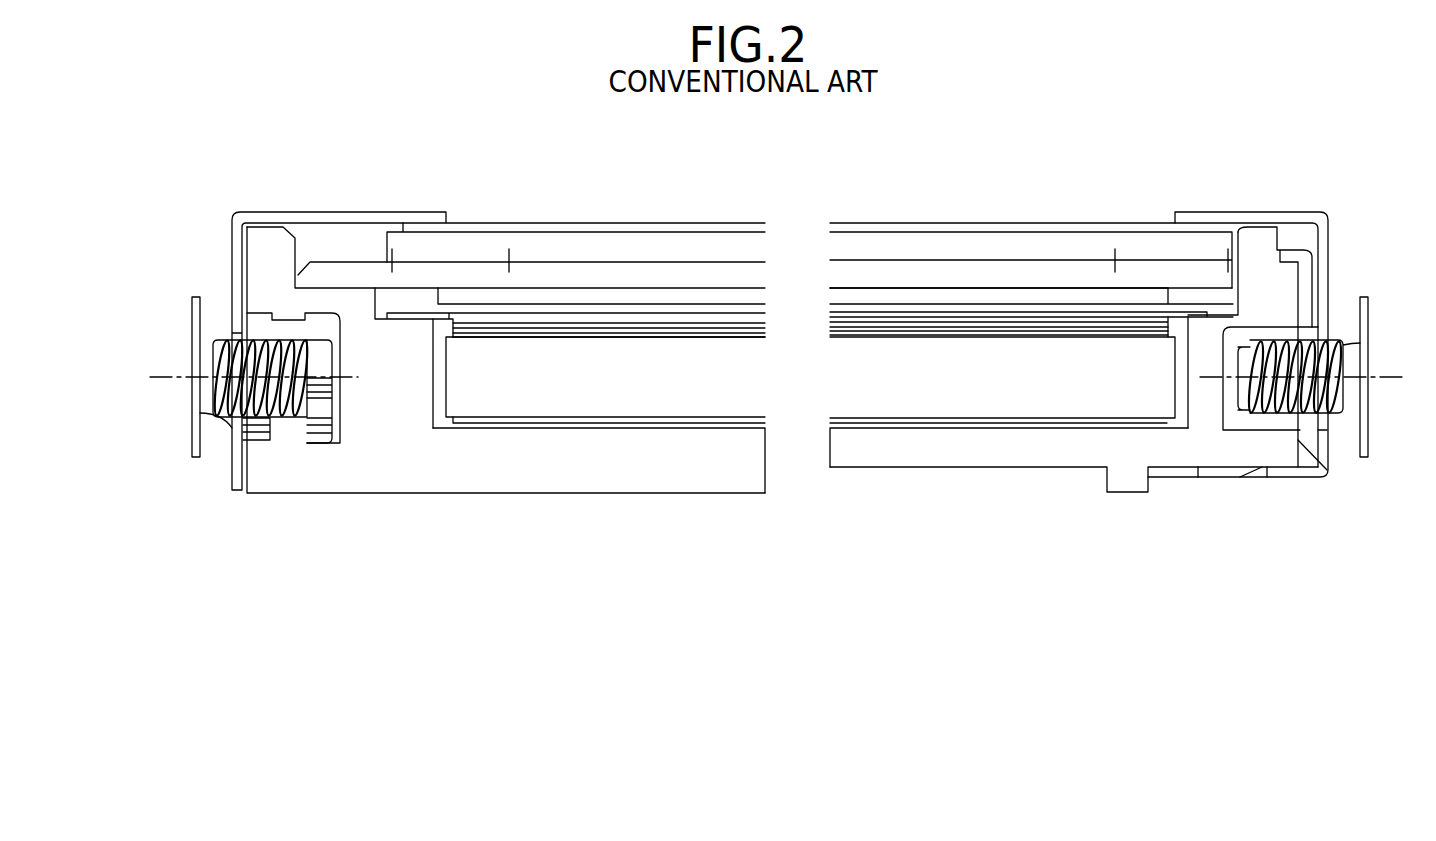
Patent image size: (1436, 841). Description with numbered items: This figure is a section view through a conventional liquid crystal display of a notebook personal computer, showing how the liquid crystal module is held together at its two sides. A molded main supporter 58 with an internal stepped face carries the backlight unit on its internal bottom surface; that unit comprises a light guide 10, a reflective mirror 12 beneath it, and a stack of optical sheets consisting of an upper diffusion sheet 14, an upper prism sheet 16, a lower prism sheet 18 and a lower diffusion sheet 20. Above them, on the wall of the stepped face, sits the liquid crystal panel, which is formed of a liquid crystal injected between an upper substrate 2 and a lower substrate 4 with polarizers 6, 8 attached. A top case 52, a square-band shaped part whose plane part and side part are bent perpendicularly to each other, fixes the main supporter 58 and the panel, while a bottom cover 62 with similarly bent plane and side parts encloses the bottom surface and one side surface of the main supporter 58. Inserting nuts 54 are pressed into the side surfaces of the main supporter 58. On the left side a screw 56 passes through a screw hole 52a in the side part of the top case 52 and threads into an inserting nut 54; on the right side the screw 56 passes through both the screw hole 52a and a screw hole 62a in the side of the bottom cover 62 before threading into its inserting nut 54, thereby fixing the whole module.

The upper substrate 2 is at (481, 241).
The lower substrate 4 is at (544, 270).
The polarizer 6 is at (882, 229).
The polarizer 8 is at (1021, 292).
The light guide 10 is at (516, 400).
The reflective mirror 12 is at (651, 422).
The upper diffusion sheet 14 is at (594, 313).
The upper prism sheet 16 is at (624, 320).
The lower prism sheet 18 is at (667, 330).
The lower diffusion sheet 20 is at (720, 336).
The top case 52 is at (350, 222).
The screw hole 52a is at (232, 428).
The inserting nut 54 is at (263, 323).
The screw 56 is at (210, 352).
The main supporter 58 is at (310, 458).
The bottom cover 62 is at (1307, 272).
The screw hole 62a is at (1303, 420).